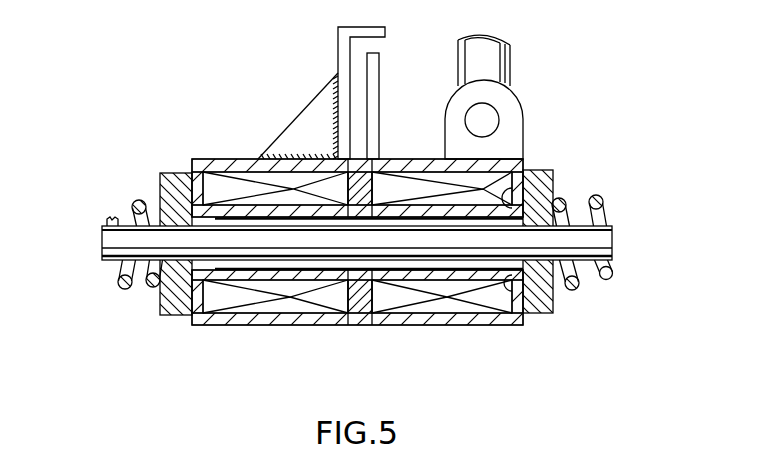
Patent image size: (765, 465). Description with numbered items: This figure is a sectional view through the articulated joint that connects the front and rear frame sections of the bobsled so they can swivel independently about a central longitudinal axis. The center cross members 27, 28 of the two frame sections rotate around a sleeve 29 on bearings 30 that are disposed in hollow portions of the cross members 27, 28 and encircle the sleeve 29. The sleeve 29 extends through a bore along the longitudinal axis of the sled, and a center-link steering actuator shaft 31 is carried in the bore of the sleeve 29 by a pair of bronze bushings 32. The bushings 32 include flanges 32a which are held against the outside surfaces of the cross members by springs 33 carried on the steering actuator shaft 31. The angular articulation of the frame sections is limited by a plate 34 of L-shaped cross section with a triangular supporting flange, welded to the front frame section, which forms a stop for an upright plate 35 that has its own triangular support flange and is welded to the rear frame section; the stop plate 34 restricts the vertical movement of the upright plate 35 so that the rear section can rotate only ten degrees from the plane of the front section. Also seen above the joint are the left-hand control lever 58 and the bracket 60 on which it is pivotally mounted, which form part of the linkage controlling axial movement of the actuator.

The center cross member 27 is at (214, 159).
The center cross member 28 is at (506, 159).
The sleeve 29 is at (525, 187).
The bearings 30 is at (350, 172).
The center-link steering actuator shaft 31 is at (116, 239).
The bronze bushings 32 is at (225, 271).
The flanges 32a is at (177, 316).
The springs 33 is at (133, 200).
The plate 34 is at (338, 47).
The upright plate 35 is at (379, 66).
The control lever 58 is at (510, 58).
The bracket 60 is at (518, 113).